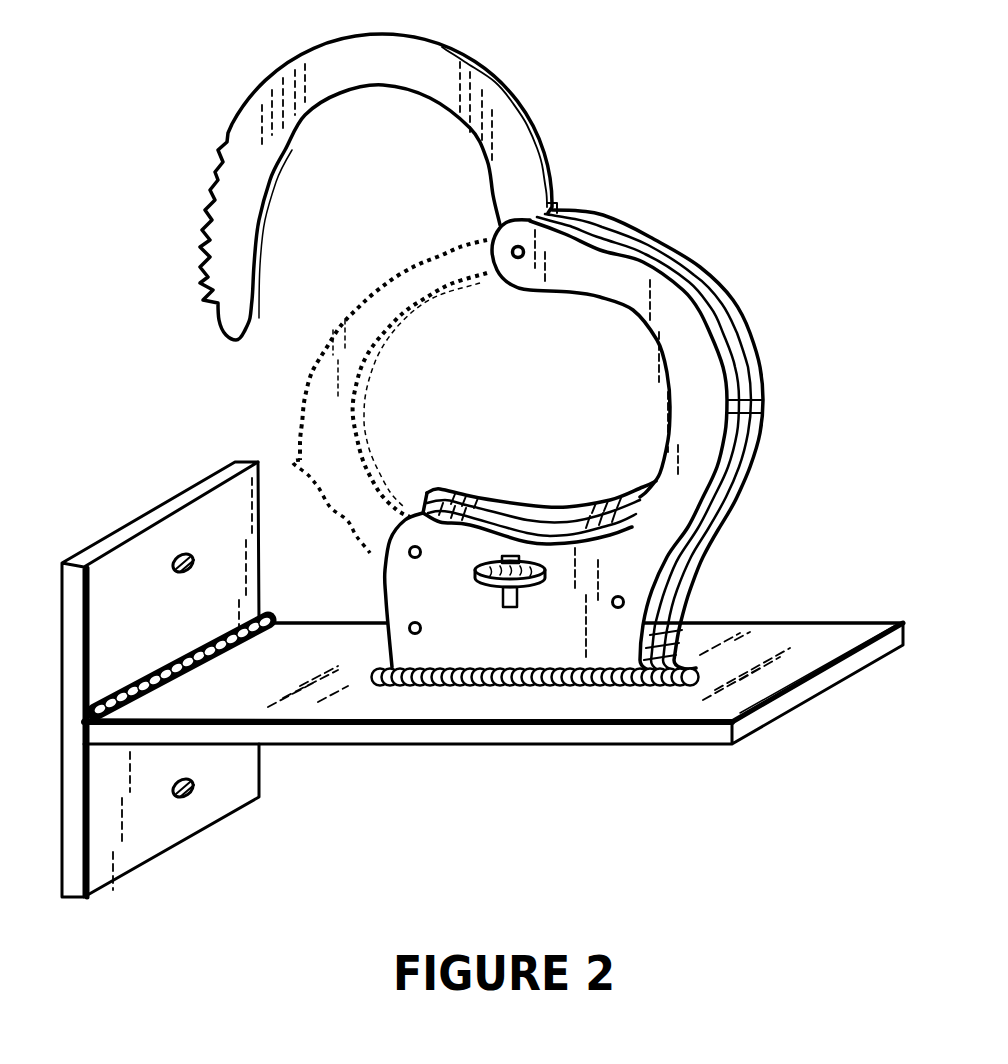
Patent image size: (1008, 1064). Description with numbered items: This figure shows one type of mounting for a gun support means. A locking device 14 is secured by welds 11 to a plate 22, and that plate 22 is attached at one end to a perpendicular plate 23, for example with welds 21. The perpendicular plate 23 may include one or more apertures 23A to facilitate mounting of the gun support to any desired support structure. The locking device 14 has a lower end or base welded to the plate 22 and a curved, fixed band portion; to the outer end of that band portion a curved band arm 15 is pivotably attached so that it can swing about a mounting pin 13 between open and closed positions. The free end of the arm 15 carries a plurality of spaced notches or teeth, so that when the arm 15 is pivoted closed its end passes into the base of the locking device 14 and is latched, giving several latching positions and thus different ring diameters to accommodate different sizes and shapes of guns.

The welds 11 is at (697, 670).
The mounting pin 13 is at (510, 244).
The locking device 14 is at (746, 482).
The curved band arm 15 is at (505, 97).
The welds 21 is at (108, 693).
The plate 22 is at (373, 732).
The perpendicular plate 23 is at (222, 782).
The apertures 23A is at (174, 568).